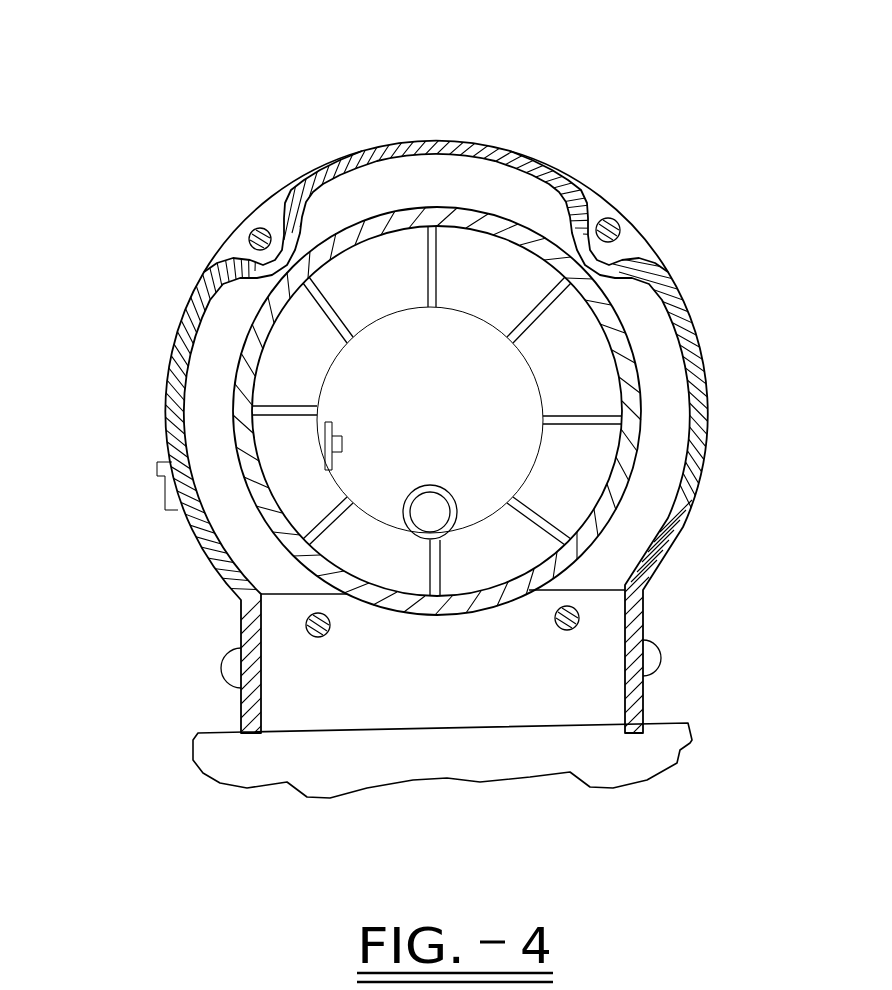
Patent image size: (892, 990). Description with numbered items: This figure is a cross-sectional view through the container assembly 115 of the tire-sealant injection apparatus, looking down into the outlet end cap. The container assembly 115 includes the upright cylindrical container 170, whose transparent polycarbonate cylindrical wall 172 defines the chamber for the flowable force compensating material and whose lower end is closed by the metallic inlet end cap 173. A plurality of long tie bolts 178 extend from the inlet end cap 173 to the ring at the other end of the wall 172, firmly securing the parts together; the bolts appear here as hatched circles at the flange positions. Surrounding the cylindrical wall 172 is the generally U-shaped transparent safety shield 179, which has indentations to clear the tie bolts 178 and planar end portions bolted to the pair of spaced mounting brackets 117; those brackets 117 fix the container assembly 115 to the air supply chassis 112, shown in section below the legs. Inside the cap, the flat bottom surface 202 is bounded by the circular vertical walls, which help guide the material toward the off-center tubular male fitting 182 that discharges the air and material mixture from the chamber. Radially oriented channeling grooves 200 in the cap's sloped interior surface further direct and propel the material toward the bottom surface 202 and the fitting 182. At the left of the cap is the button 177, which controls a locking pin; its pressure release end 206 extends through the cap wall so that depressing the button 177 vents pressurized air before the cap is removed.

The air supply chassis 112 is at (590, 753).
The container assembly 115 is at (405, 125).
The mounting brackets 117 is at (562, 697).
The cylindrical container 170 is at (225, 386).
The cylindrical wall 172 is at (283, 327).
The inlet end cap 173 is at (259, 206).
The button 177 is at (162, 490).
The tie bolts 178 is at (250, 238).
The safety shield 179 is at (166, 446).
The tubular male fitting 182 is at (402, 509).
The channeling groove 200 is at (537, 307).
The flat bottom surface 202 is at (467, 428).
The pressure release end 206 is at (345, 440).